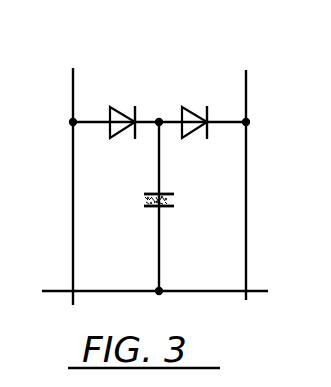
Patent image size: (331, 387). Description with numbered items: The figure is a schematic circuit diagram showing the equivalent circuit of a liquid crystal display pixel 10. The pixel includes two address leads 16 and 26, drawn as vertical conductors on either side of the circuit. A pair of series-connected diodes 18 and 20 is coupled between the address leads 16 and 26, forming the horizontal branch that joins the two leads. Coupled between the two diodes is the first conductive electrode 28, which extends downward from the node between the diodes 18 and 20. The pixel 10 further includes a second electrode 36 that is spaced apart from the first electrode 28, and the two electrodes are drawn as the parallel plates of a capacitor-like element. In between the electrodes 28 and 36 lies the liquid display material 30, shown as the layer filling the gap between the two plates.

The pixel 10 is at (176, 79).
The address lead 16 is at (73, 91).
The diode 18 is at (192, 108).
The diode 20 is at (122, 108).
The address lead 26 is at (248, 98).
The first conductive electrode 28 is at (169, 194).
The liquid display material 30 is at (175, 200).
The second electrode 36 is at (169, 207).